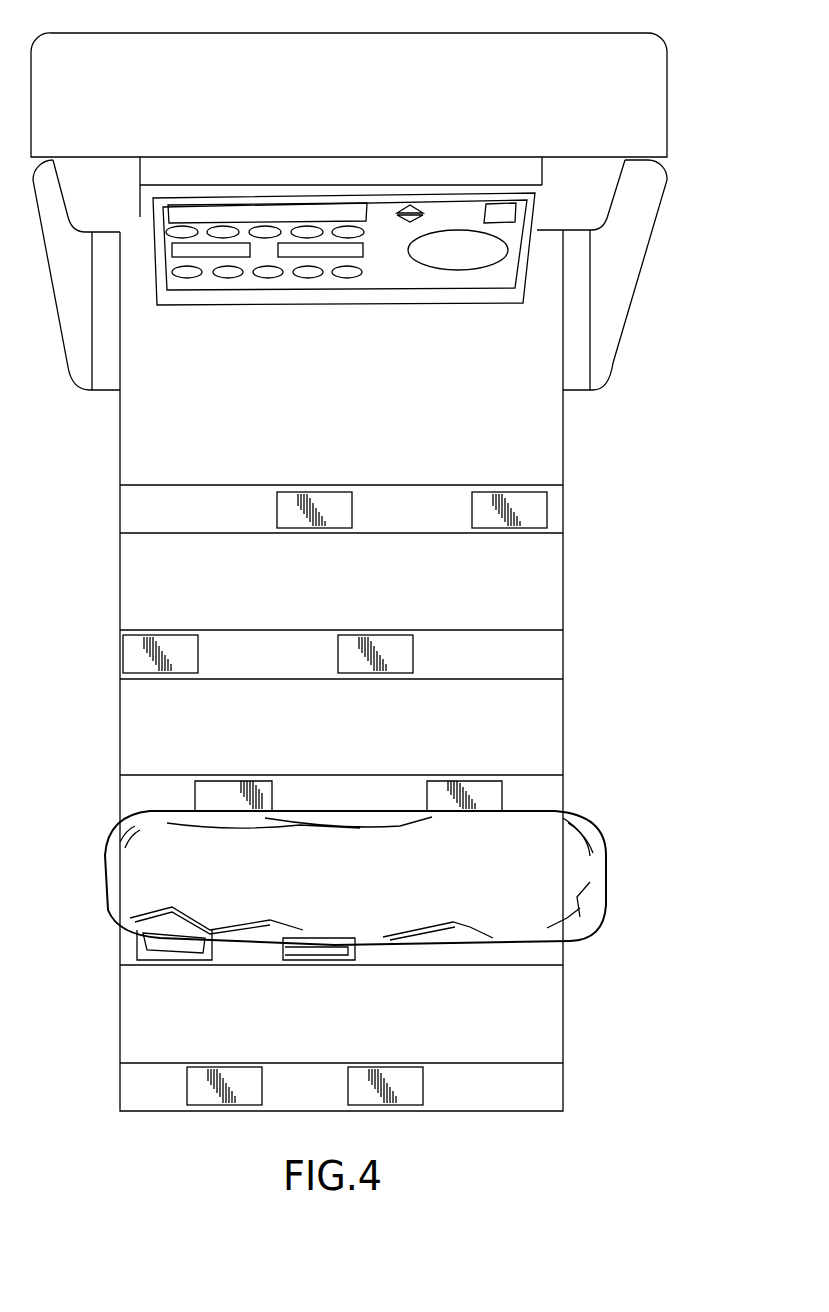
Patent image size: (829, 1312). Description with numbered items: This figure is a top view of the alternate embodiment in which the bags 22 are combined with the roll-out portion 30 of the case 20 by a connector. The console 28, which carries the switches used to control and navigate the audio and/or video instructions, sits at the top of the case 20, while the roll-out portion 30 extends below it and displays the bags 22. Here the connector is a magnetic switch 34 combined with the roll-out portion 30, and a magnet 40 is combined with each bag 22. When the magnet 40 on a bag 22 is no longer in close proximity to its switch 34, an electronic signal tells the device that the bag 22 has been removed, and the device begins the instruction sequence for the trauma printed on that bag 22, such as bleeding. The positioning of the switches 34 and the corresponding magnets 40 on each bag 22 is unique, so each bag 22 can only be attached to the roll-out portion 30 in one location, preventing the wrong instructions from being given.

The case 20 is at (613, 106).
The console 28 is at (157, 168).
The roll-out portion 30 is at (630, 799).
The magnetic switch 34 is at (527, 513).
The break-away bag 22 is at (558, 887).
The magnet 40 is at (133, 940).